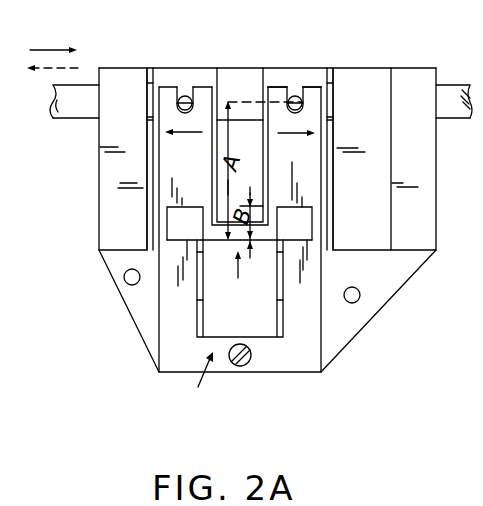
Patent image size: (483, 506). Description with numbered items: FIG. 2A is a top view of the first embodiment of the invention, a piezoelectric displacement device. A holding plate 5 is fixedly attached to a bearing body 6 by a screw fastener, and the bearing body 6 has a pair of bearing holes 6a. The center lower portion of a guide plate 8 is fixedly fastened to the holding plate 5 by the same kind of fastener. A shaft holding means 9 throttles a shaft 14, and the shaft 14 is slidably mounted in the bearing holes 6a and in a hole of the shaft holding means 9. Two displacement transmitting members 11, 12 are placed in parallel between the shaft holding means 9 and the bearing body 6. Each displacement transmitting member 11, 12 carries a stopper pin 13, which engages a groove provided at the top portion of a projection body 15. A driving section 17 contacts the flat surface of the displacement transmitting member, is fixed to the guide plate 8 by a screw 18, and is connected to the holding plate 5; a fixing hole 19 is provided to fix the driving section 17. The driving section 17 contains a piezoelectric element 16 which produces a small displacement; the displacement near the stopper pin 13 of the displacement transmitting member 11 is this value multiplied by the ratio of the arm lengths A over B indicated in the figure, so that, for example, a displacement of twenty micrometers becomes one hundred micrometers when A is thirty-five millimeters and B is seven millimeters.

The holding plate 5 is at (137, 319).
The bearing body 6 is at (122, 72).
The bearing holes 6a is at (99, 78).
The guide plate 8 is at (201, 337).
The shaft holding means 9 is at (361, 90).
The displacement transmitting member 11 is at (277, 77).
The displacement transmitting member 12 is at (176, 50).
The stopper pin 13 is at (186, 94).
The shaft 14 is at (78, 107).
The projection body 15 is at (167, 348).
The piezoelectric element 16 is at (262, 333).
The driving section 17 is at (190, 381).
The screw 18 is at (242, 367).
The fixing hole 19 is at (131, 278).